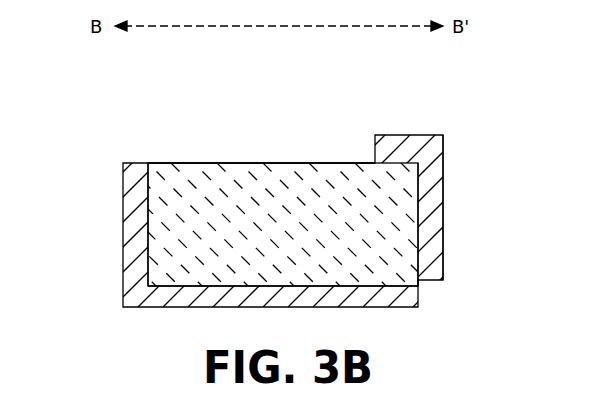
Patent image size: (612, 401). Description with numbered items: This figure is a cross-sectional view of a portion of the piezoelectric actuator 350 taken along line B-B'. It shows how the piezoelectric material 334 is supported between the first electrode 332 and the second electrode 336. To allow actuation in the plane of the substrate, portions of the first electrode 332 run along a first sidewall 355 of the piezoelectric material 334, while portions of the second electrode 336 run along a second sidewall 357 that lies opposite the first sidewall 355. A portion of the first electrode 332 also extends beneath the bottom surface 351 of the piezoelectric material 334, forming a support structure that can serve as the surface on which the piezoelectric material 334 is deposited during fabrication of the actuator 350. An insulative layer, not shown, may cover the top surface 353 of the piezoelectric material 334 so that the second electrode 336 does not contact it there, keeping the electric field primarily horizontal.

The first electrode 332 is at (134, 244).
The piezoelectric material 334 is at (292, 234).
The second electrode 336 is at (443, 232).
The actuator 350 is at (497, 101).
The bottom surface 351 is at (325, 283).
The top surface 353 is at (186, 163).
The first sidewall 355 is at (153, 202).
The second sidewall 357 is at (416, 197).